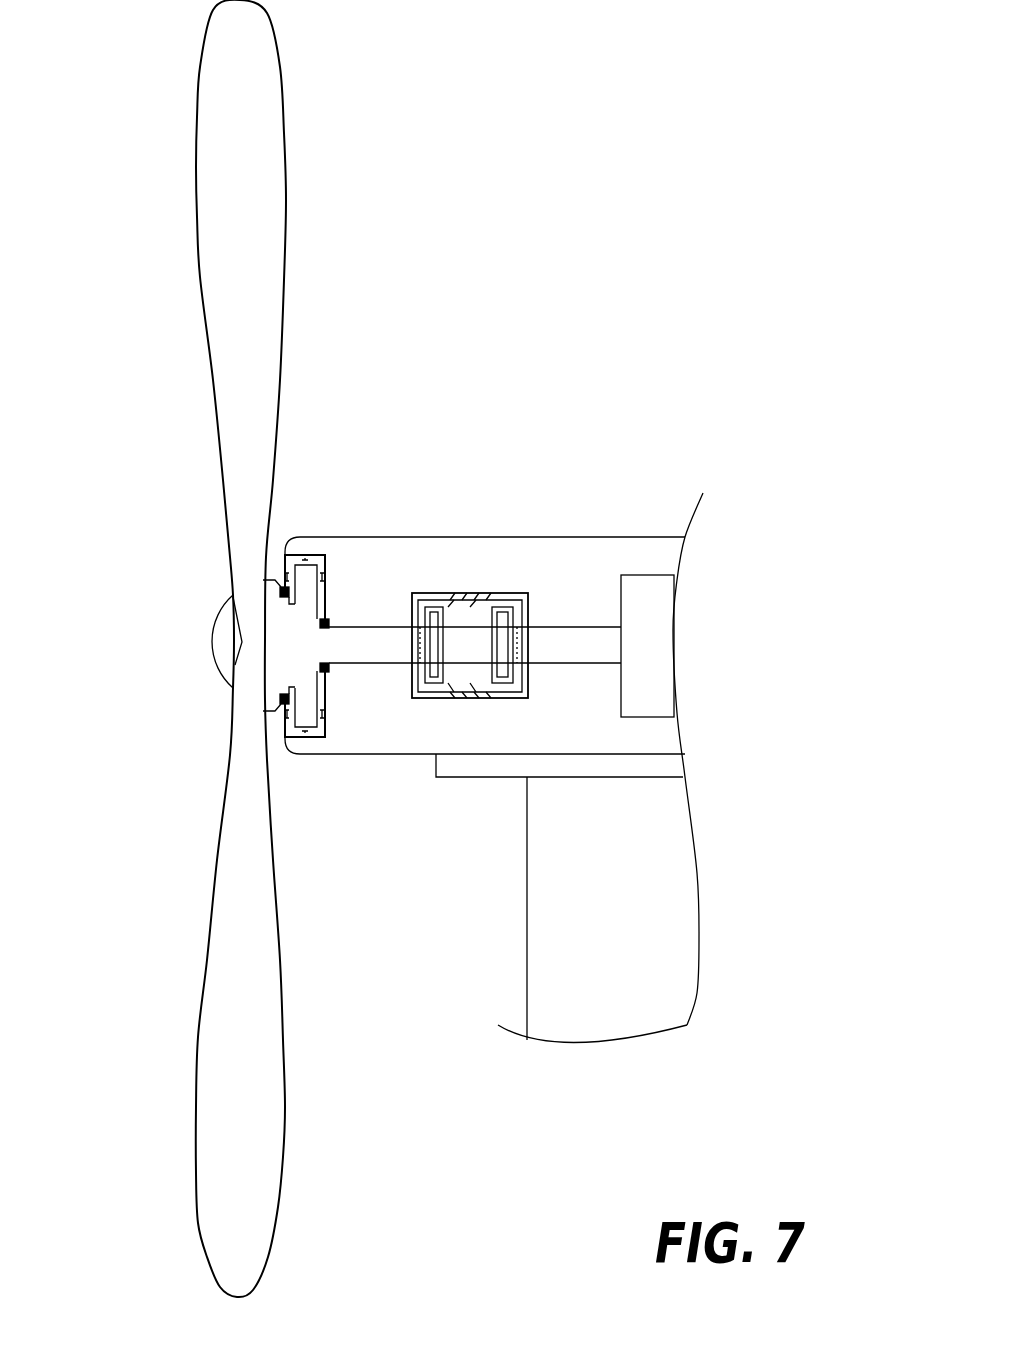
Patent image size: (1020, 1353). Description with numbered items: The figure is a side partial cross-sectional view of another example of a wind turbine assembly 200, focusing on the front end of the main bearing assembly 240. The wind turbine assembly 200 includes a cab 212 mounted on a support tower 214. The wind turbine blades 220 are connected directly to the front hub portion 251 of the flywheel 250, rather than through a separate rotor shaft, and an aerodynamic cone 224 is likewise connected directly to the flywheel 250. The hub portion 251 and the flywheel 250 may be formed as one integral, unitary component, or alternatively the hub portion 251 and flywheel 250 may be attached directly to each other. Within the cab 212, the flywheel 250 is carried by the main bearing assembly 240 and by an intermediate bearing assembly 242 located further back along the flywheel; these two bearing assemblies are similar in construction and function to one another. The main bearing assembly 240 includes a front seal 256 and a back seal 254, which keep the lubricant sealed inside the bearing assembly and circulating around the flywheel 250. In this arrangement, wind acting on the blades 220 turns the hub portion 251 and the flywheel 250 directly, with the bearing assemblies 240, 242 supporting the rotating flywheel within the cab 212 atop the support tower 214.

The wind turbine assembly 200 is at (558, 428).
The cab 212 is at (590, 537).
The support tower 214 is at (685, 940).
The wind turbine blades 220 is at (263, 208).
The aerodynamic cone 224 is at (212, 637).
The main bearing assembly 240 is at (332, 712).
The intermediate bearing assembly 242 is at (473, 603).
The flywheel 250 is at (290, 556).
The hub portion 251 is at (273, 627).
The back seal 254 is at (330, 616).
The front seal 256 is at (273, 705).